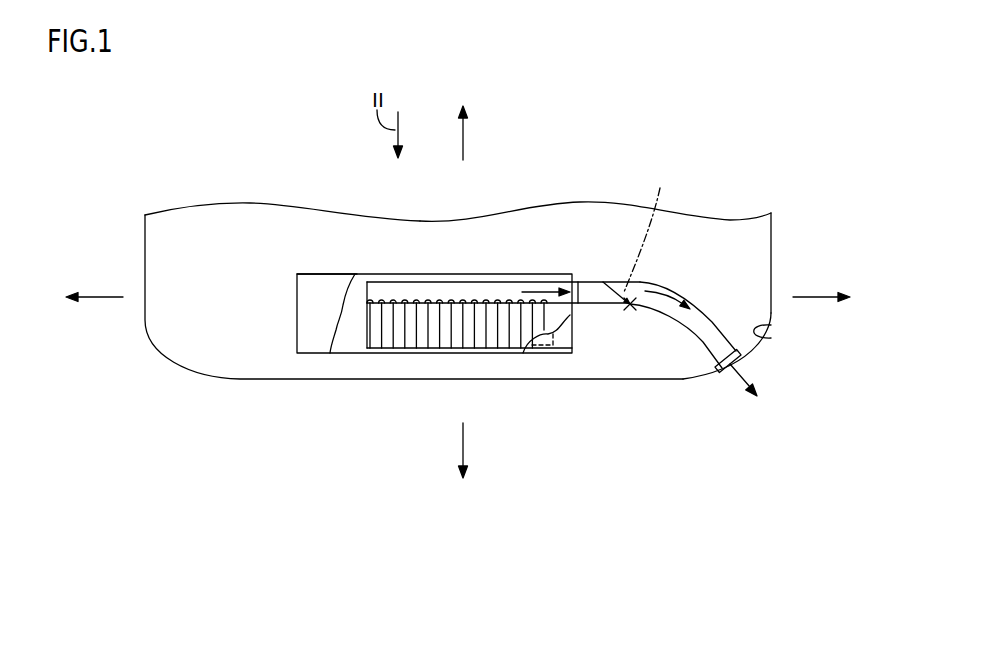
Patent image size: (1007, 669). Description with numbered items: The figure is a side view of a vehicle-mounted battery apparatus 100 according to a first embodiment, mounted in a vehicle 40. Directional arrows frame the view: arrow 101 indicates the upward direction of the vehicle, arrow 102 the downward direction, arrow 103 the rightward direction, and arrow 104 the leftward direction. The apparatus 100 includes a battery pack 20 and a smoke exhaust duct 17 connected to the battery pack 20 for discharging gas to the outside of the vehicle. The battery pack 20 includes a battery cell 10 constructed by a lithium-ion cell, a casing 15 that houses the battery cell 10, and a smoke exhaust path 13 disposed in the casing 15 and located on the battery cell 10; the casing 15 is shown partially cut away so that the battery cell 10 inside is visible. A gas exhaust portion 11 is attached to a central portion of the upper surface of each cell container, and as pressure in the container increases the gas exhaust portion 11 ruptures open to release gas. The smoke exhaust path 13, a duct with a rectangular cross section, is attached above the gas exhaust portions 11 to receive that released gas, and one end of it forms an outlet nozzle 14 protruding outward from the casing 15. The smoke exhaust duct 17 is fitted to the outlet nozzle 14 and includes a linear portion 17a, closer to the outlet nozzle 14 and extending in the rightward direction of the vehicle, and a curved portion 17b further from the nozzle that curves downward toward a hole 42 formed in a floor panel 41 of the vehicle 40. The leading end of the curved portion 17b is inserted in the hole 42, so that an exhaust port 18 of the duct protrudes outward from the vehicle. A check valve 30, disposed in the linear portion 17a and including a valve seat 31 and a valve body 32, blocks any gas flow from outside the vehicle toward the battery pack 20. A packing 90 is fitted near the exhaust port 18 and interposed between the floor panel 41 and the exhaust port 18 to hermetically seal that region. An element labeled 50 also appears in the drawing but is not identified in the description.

The battery cell 10 is at (499, 295).
The gas exhaust portion 11 is at (372, 302).
The smoke exhaust path 13 is at (417, 282).
The outlet nozzle 14 is at (573, 282).
The casing 15 is at (319, 274).
The smoke exhaust duct 17 is at (693, 310).
The linear portion 17a is at (600, 282).
The curved portion 17b is at (694, 331).
The exhaust port 18 is at (728, 373).
The battery pack 20 is at (433, 295).
The check valve 30 is at (630, 310).
The valve seat 31 is at (621, 306).
The valve body 32 is at (657, 236).
The vehicle 40 is at (494, 306).
The floor panel 41 is at (771, 329).
The hole 42 is at (716, 378).
The housing upper wall 50 is at (190, 228).
The packing 90 is at (748, 360).
The vehicle-mounted battery apparatus 100 is at (513, 250).
The arrow 101 is at (465, 142).
The arrow 102 is at (466, 434).
The arrow 103 is at (813, 295).
The arrow 104 is at (100, 293).